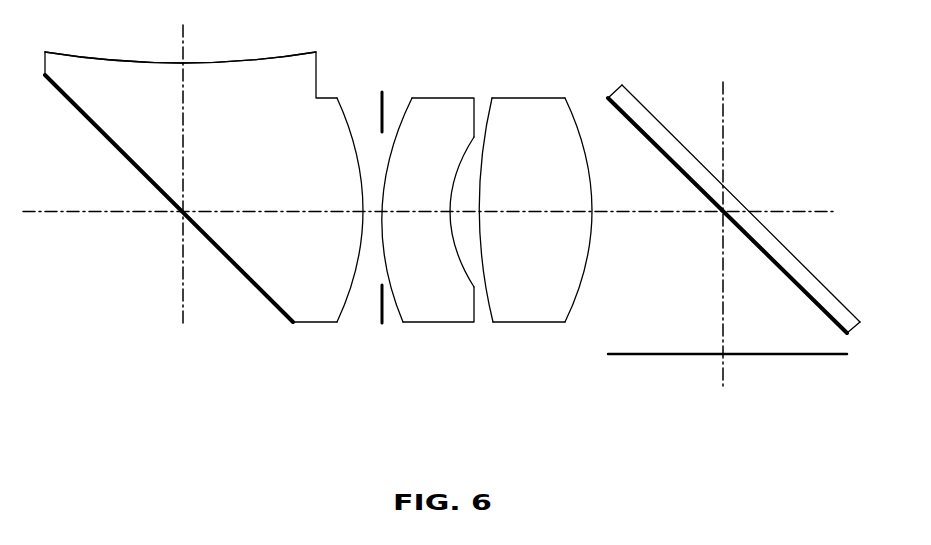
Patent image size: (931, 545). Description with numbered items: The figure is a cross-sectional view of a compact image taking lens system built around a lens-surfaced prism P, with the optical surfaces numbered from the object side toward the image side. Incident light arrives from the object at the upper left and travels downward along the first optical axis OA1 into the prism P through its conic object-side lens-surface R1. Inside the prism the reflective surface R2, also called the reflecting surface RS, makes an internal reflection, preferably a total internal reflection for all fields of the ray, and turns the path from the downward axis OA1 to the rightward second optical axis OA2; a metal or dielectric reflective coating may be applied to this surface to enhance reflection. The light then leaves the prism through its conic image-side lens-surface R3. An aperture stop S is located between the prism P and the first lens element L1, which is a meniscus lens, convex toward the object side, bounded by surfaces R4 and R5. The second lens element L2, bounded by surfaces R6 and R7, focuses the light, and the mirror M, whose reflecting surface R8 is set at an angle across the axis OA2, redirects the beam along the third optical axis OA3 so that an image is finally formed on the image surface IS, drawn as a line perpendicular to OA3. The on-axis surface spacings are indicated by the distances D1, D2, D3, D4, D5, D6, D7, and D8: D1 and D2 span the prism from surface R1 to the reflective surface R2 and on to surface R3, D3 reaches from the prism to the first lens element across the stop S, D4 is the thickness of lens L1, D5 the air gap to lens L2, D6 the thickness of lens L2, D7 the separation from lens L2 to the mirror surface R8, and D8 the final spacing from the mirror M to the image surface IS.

The lens-surfaced prism P is at (199, 167).
The surface 1 (object-side lens-surface of prism) R1 is at (137, 60).
The surface 2 (reflective surface RS) R2 is at (92, 123).
The surface 3 (image-side lens-surface of prism) R3 is at (360, 187).
The aperture stop S is at (382, 326).
The first lens element L1 is at (416, 229).
The surface 4 R4 is at (403, 102).
The surface 5 R5 is at (450, 190).
The second lens element L2 is at (546, 229).
The surface 6 R6 is at (485, 102).
The surface 7 R7 is at (585, 147).
The mirror M is at (734, 198).
The surface 8 (reflective surface of mirror) R8 is at (743, 225).
The image surface IS is at (790, 365).
The optical axis OA1 is at (186, 44).
The optical axis OA2 is at (82, 215).
The optical axis OA3 is at (725, 382).
The distance D1 is at (185, 125).
The distance D2 is at (295, 214).
The distance D3 is at (375, 214).
The distance D4 is at (417, 214).
The distance D5 is at (465, 214).
The distance D6 is at (518, 214).
The distance D7 is at (620, 214).
The distance D8 is at (725, 288).